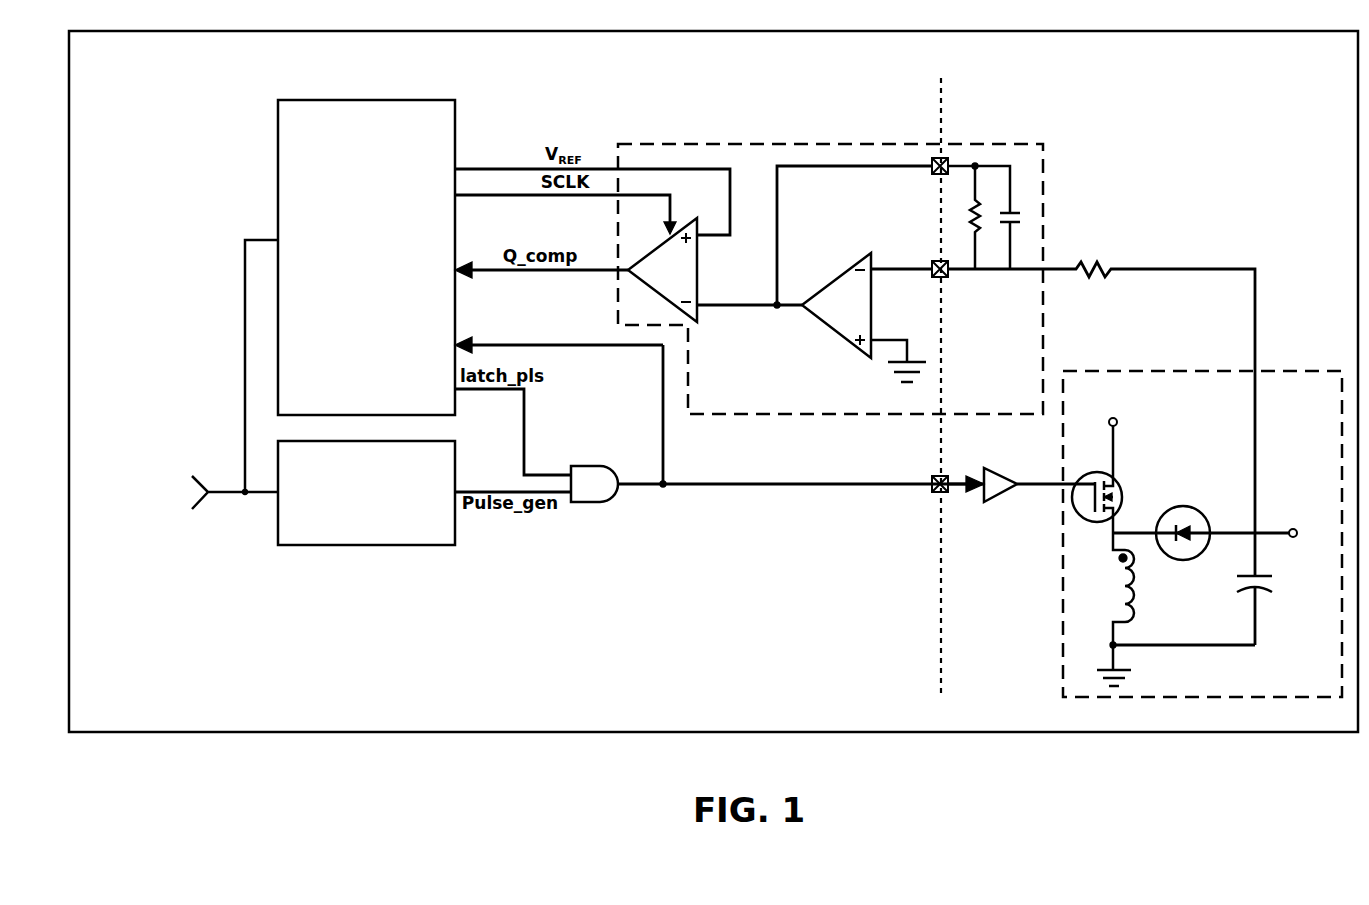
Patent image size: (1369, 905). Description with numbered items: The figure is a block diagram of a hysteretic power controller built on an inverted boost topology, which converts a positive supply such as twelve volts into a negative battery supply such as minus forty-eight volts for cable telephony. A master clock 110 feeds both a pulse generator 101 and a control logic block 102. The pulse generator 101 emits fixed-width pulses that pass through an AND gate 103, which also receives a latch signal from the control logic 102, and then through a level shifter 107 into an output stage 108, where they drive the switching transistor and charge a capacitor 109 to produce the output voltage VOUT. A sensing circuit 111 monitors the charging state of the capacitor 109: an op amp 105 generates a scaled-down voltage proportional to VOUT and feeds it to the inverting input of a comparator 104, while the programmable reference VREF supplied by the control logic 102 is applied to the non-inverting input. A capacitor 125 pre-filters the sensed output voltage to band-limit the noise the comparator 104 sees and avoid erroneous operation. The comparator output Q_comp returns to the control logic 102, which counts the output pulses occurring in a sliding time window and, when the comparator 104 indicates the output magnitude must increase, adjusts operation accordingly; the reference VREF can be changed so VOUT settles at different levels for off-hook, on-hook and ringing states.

The pulse generator 101 is at (458, 547).
The control logic block 102 is at (278, 152).
The AND gate 103 is at (612, 494).
The comparator 104 is at (697, 310).
The op amp 105 is at (840, 338).
The level shifter 107 is at (997, 498).
The output stage 108 is at (1063, 633).
The capacitor 109 is at (1260, 590).
The master clock 110 is at (130, 518).
The sensing circuit 111 is at (775, 143).
The capacitor 125 is at (1012, 208).